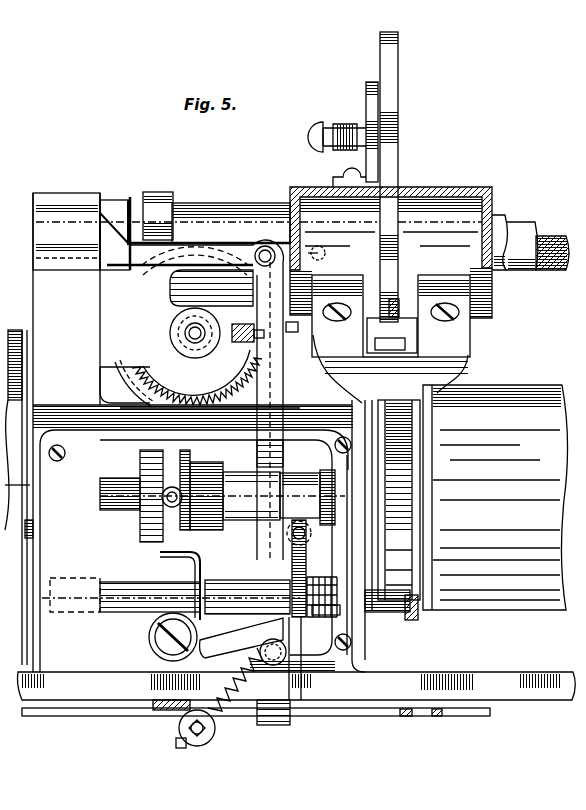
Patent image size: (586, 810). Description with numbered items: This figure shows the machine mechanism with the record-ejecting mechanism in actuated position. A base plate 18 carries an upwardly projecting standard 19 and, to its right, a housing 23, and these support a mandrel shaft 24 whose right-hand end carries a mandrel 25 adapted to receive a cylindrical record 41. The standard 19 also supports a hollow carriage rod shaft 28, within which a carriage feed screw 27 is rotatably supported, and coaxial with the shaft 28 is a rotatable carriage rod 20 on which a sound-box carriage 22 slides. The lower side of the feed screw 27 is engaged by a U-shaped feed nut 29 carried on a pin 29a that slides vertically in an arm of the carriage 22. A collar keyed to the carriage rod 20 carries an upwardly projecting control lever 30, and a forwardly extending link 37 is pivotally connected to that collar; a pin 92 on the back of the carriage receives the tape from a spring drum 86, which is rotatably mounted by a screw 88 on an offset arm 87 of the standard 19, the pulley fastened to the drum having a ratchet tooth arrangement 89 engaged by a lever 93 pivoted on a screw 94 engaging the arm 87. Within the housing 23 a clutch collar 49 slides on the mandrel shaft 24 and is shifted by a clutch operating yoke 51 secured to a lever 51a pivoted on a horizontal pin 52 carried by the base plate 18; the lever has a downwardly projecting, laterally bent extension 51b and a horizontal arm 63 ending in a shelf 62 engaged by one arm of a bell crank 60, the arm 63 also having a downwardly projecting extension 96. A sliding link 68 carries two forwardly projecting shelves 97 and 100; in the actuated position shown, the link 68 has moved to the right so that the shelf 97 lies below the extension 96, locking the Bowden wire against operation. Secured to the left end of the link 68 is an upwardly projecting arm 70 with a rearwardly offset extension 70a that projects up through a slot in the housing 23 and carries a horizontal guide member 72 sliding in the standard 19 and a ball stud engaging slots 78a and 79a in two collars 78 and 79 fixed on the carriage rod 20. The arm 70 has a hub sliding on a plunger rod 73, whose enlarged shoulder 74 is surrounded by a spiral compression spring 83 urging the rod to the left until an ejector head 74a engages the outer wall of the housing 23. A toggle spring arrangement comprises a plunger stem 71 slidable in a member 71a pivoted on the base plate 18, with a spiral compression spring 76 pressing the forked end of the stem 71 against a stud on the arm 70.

The base plate 18 is at (297, 686).
The standard 19 is at (91, 432).
The carriage rod 20 is at (506, 216).
The sound-box carriage 22 is at (440, 187).
The housing 23 is at (148, 413).
The mandrel shaft 24 is at (300, 488).
The mandrel 25 is at (396, 505).
The carriage feed screw 27 is at (554, 242).
The carriage rod shaft 28 is at (528, 230).
The feed nut 29 is at (368, 328).
The pin 29a is at (405, 353).
The control lever 30 is at (398, 117).
The link 37 is at (406, 298).
The cylindrical record 41 is at (495, 497).
The clutch collar 49 is at (222, 496).
The clutch operating yoke 51 is at (163, 538).
The lever 51a is at (199, 565).
The extension 51b is at (170, 710).
The pin 52 is at (158, 630).
The bell crank 60 is at (307, 556).
The shelf 62 is at (330, 615).
The arm 63 is at (213, 642).
The sliding link 68 is at (462, 716).
The arm 70 is at (250, 712).
The extension 70a is at (286, 402).
The plunger stem 71 is at (180, 745).
The member 71a is at (203, 746).
The guide member 72 is at (217, 245).
The plunger rod 73 is at (140, 598).
The shoulder 74 is at (395, 612).
The ejector head 74a is at (418, 608).
The spiral compression spring 76 is at (222, 705).
The collar 78 is at (158, 193).
The slot 78a is at (182, 247).
The collar 79 is at (106, 200).
The slot 79a is at (112, 230).
The spiral compression spring 83 is at (335, 600).
The spring drum 86 is at (112, 386).
The offset arm 87 is at (195, 314).
The screw 88 is at (24, 332).
The ratchet tooth arrangement 89 is at (204, 402).
The pin 92 is at (327, 252).
The lever 93 is at (292, 333).
The screw 94 is at (240, 343).
The extension 96 is at (288, 665).
The shelf 97 is at (403, 716).
The shelf 100 is at (436, 716).